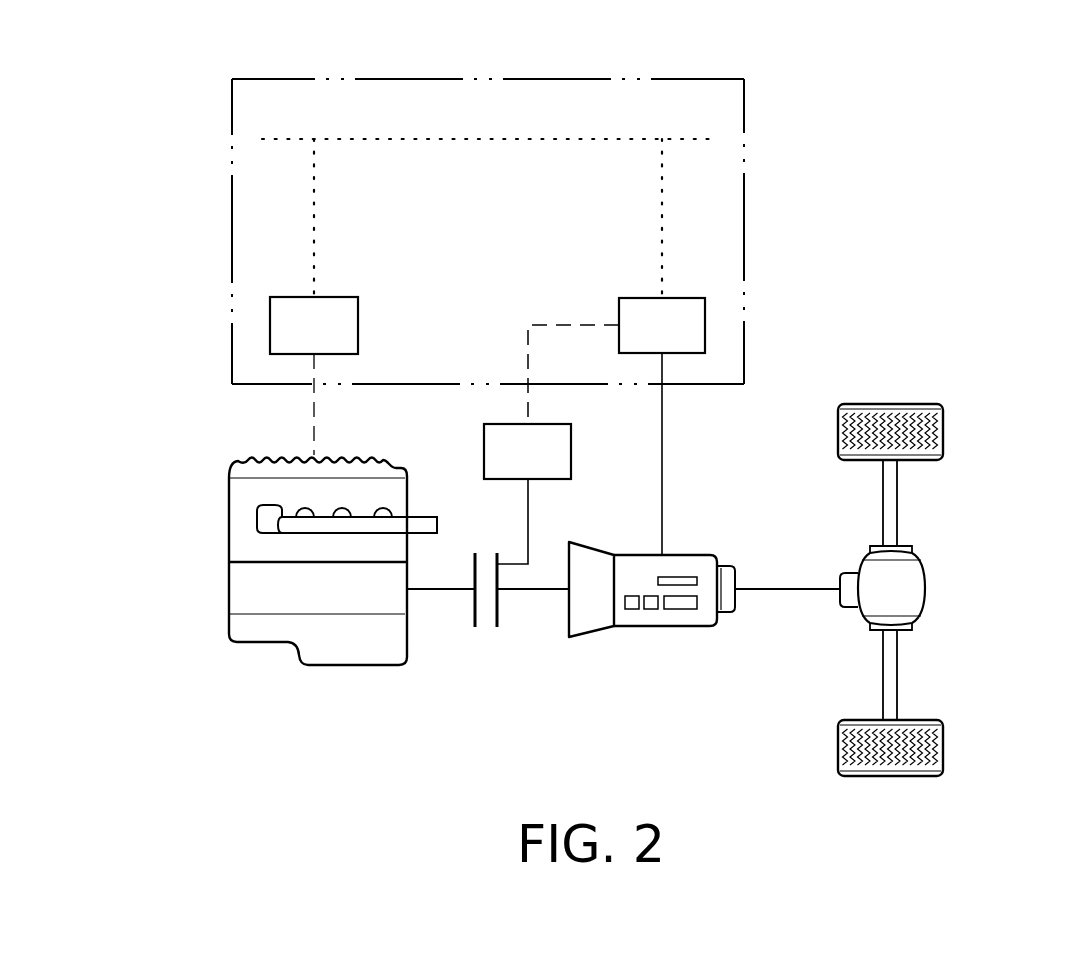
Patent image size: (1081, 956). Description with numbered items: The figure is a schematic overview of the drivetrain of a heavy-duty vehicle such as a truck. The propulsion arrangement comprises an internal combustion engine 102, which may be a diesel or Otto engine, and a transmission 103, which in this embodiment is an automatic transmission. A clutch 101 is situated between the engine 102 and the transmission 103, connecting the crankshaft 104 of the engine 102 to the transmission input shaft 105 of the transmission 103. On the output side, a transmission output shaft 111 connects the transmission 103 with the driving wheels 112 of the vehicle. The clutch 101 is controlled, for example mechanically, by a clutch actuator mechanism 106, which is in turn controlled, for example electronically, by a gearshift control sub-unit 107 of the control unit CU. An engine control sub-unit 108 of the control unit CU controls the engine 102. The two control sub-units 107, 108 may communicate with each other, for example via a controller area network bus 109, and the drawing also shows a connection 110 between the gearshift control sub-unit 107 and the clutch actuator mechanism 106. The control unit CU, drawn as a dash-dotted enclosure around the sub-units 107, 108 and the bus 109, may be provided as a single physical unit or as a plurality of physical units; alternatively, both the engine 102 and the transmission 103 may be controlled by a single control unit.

The clutch 101 is at (484, 662).
The internal combustion engine 102 is at (317, 667).
The transmission 103 is at (648, 626).
The crankshaft 104 is at (425, 589).
The transmission input shaft 105 is at (528, 589).
The clutch actuator mechanism 106 is at (571, 453).
The gearshift control sub-unit 107 is at (705, 325).
The engine control sub-unit 108 is at (270, 325).
The controller area network bus 109 is at (493, 139).
The control connection 110 is at (580, 325).
The transmission output shaft 111 is at (785, 589).
The driving wheels 112 is at (943, 430).
The control unit CU is at (744, 202).